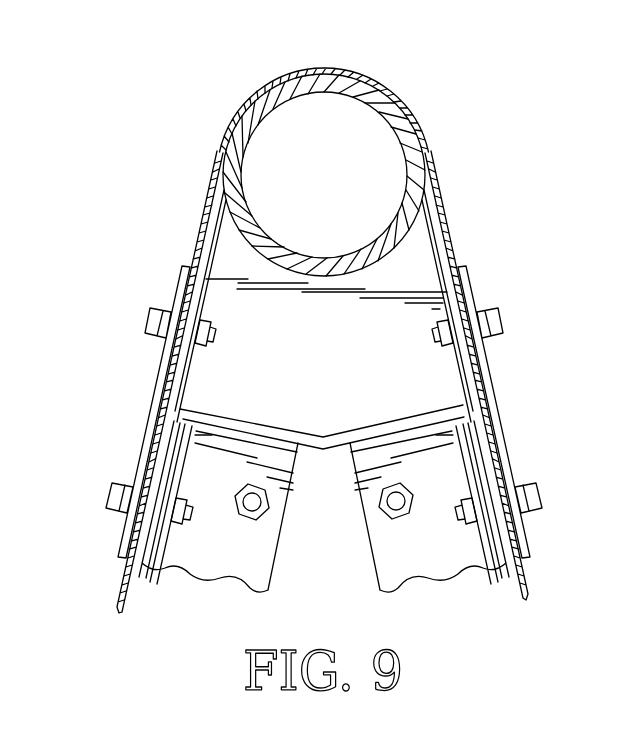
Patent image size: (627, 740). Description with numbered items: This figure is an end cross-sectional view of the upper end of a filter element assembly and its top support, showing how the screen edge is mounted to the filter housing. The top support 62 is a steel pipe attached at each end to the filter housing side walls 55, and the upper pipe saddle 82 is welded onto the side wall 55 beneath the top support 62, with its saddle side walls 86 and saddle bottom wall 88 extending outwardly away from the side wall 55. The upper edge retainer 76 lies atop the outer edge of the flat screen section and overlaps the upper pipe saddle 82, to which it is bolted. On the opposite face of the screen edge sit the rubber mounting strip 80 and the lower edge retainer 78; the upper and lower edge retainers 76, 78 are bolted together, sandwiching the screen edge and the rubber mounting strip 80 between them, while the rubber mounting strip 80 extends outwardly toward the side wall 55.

The side wall 55 is at (160, 152).
The top support 62 is at (393, 107).
The upper edge retainer 76 is at (181, 266).
The lower edge retainer 78 is at (174, 548).
The rubber mounting strip 80 is at (143, 564).
The upper pipe saddle 82 is at (303, 338).
The saddle side walls 86 is at (183, 374).
The saddle bottom wall 88 is at (345, 432).